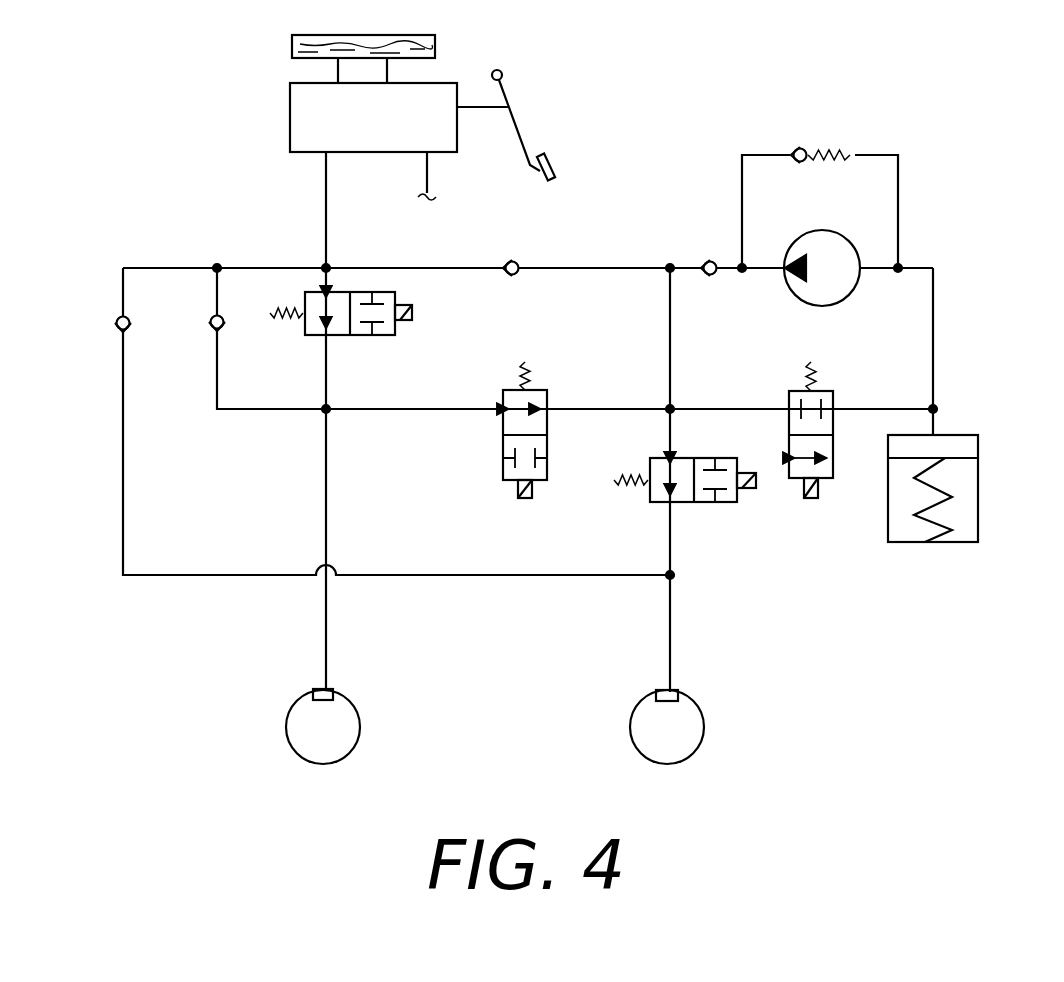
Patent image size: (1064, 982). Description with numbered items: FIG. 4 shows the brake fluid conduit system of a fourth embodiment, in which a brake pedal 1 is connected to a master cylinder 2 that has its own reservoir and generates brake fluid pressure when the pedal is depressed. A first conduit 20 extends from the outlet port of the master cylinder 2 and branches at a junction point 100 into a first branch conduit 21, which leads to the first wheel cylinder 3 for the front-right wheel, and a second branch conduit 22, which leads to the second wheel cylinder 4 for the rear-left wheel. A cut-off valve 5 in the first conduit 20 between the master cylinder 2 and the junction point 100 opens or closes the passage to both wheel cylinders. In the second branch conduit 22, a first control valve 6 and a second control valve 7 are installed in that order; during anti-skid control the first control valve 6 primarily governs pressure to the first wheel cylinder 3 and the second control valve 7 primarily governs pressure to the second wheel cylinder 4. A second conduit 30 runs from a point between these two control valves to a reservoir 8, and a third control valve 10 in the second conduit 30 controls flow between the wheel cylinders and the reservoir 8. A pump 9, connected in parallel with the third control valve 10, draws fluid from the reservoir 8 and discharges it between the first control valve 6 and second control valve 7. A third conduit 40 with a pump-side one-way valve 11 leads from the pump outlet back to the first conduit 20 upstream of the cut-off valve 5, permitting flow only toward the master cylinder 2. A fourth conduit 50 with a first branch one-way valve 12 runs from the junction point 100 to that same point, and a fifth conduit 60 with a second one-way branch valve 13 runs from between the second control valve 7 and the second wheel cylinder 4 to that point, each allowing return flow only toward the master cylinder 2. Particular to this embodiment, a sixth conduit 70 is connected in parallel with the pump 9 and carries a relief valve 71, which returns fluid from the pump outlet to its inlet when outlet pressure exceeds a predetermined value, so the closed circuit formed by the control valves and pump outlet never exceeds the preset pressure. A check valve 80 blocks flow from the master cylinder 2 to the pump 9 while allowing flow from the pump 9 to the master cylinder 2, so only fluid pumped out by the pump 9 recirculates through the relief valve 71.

The brake pedal 1 is at (517, 120).
The master cylinder 2 is at (290, 110).
The first wheel cylinder 3 is at (335, 692).
The second wheel cylinder 4 is at (672, 695).
The cut-off valve 5 is at (367, 335).
The first control valve 6 is at (500, 467).
The second control valve 7 is at (708, 502).
The reservoir 8 is at (970, 500).
The pump 9 is at (845, 248).
The third control valve 10 is at (832, 480).
The pump-side one-way valve 11 is at (520, 275).
The first branch one-way valve 12 is at (210, 331).
The second one-way branch valve 13 is at (116, 332).
The first conduit 20 is at (334, 232).
The first branch conduit 21 is at (321, 488).
The second branch conduit 22 is at (446, 411).
The second conduit 30 is at (712, 406).
The third conduit 40 is at (592, 266).
The fourth conduit 50 is at (245, 411).
The fifth conduit 60 is at (195, 578).
The sixth conduit 70 is at (760, 152).
The relief valve 71 is at (820, 147).
The check valve 80 is at (712, 258).
The junction point 100 is at (330, 411).